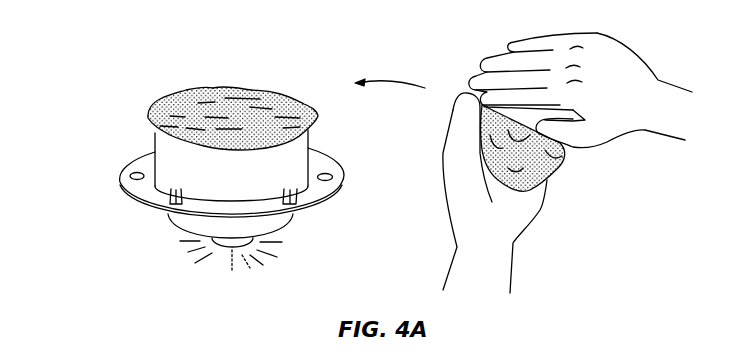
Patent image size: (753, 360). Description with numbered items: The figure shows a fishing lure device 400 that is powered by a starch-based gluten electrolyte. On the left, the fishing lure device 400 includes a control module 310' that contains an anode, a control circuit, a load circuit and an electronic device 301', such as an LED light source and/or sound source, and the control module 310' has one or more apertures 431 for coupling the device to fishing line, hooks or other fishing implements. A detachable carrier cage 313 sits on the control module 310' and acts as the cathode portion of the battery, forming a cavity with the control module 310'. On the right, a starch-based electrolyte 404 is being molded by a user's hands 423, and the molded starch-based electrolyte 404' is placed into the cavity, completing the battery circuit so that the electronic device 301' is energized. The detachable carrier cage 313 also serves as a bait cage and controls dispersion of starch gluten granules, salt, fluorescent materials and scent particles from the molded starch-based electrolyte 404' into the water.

The fishing lure device 400 is at (142, 57).
The detachable carrier cage 313 is at (97, 97).
The control module 310' is at (243, 188).
The aperture 431 is at (136, 171).
The electronic device 301' is at (215, 258).
The molded starch-based electrolyte 404' is at (233, 97).
The starch-based electrolyte 404 is at (536, 155).
The user's hands 423 is at (610, 52).